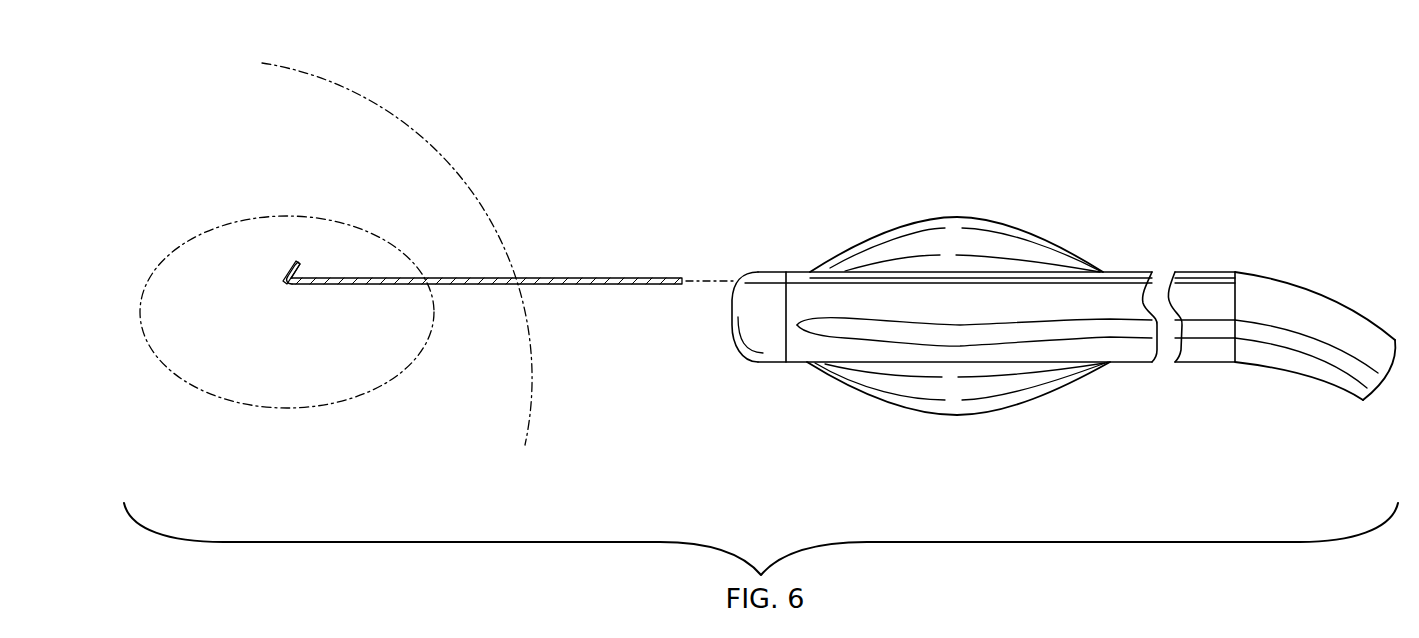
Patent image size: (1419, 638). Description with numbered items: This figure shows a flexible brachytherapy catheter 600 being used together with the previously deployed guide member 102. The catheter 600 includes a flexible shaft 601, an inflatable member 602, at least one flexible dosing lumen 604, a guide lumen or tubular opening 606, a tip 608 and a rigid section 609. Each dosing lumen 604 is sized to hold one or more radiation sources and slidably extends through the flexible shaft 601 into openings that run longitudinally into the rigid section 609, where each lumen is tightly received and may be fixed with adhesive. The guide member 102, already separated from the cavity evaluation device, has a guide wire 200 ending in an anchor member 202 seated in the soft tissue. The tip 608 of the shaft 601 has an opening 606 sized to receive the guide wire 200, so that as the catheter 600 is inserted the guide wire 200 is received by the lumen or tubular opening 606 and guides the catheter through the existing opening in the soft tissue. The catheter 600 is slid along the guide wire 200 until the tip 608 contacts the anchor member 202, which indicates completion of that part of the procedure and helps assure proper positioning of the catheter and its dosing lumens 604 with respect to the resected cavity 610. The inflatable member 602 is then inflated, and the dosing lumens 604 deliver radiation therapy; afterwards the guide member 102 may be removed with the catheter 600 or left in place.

The brachytherapy catheter 600 is at (1279, 34).
The guide member 102 is at (648, 247).
The guide wire 200 is at (592, 282).
The anchor member 202 is at (278, 283).
The resected cavity 610 is at (245, 247).
The flexible shaft 601 is at (1278, 285).
The inflatable member 602 is at (968, 225).
The flexible dosing lumen 604 is at (1117, 327).
The guide lumen or tubular opening 606 is at (808, 282).
The tip 608 is at (740, 358).
The rigid section 609 is at (1133, 271).